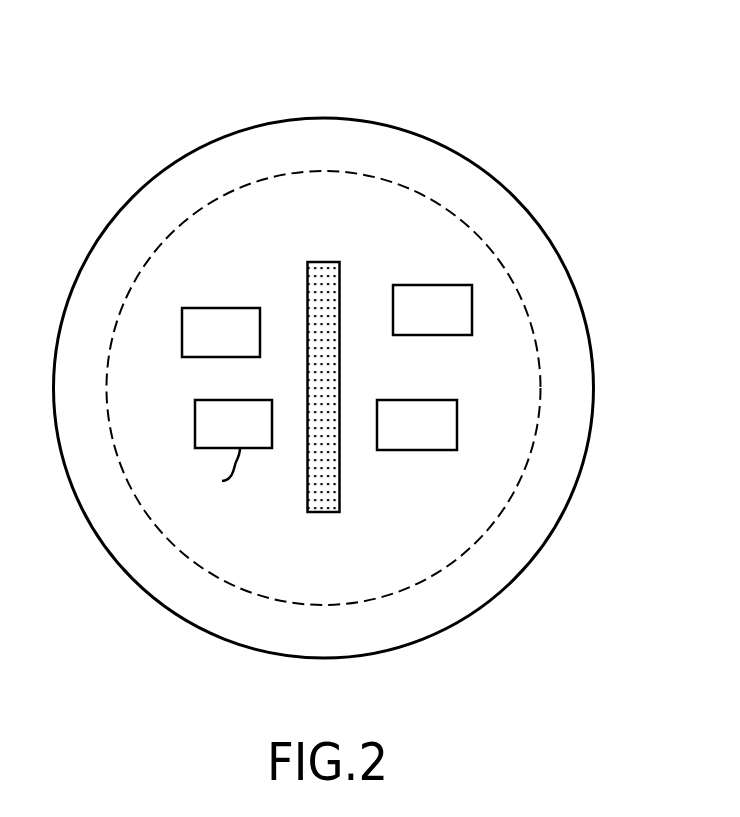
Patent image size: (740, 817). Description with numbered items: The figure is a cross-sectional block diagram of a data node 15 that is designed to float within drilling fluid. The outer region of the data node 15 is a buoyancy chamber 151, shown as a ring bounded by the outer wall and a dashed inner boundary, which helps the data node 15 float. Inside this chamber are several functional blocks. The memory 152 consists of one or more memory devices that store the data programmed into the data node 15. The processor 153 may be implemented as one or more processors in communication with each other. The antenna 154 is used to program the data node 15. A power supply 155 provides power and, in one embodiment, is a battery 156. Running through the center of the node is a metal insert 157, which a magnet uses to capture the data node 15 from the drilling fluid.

The data node 15 is at (152, 100).
The buoyancy chamber 151 is at (108, 257).
The memory 152 is at (244, 347).
The processor 153 is at (456, 324).
The antenna 154 is at (440, 438).
The power supply 155 is at (257, 437).
The battery 156 is at (208, 474).
The metal insert 157 is at (314, 262).